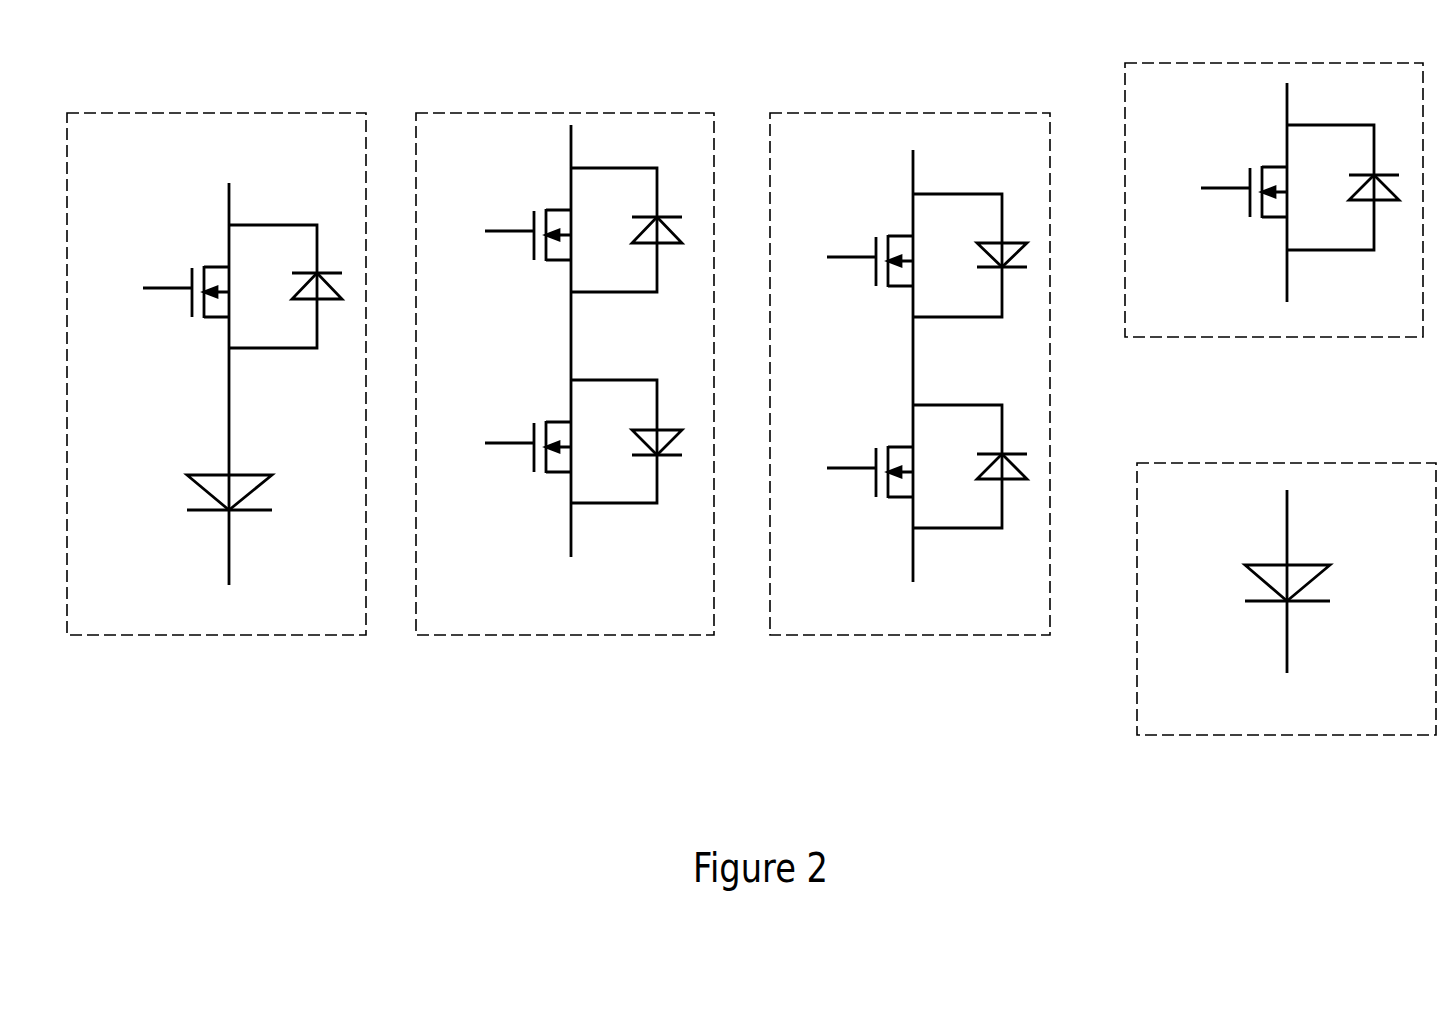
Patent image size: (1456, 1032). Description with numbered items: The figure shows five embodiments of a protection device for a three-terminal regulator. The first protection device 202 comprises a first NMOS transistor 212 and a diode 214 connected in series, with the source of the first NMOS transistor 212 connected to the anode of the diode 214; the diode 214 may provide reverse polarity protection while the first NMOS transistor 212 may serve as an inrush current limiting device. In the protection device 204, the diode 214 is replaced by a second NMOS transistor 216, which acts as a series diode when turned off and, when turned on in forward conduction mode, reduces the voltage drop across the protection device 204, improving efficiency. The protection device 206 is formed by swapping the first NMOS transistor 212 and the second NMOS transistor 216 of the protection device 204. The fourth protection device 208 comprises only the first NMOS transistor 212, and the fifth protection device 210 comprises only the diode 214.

The first protection device 202 is at (222, 635).
The protection device 204 is at (543, 635).
The protection device 206 is at (887, 635).
The fourth protection device 208 is at (1277, 338).
The fifth protection device 210 is at (1277, 735).
The first NMOS transistor 212 is at (177, 308).
The diode 214 is at (187, 498).
The second NMOS transistor 216 is at (540, 485).